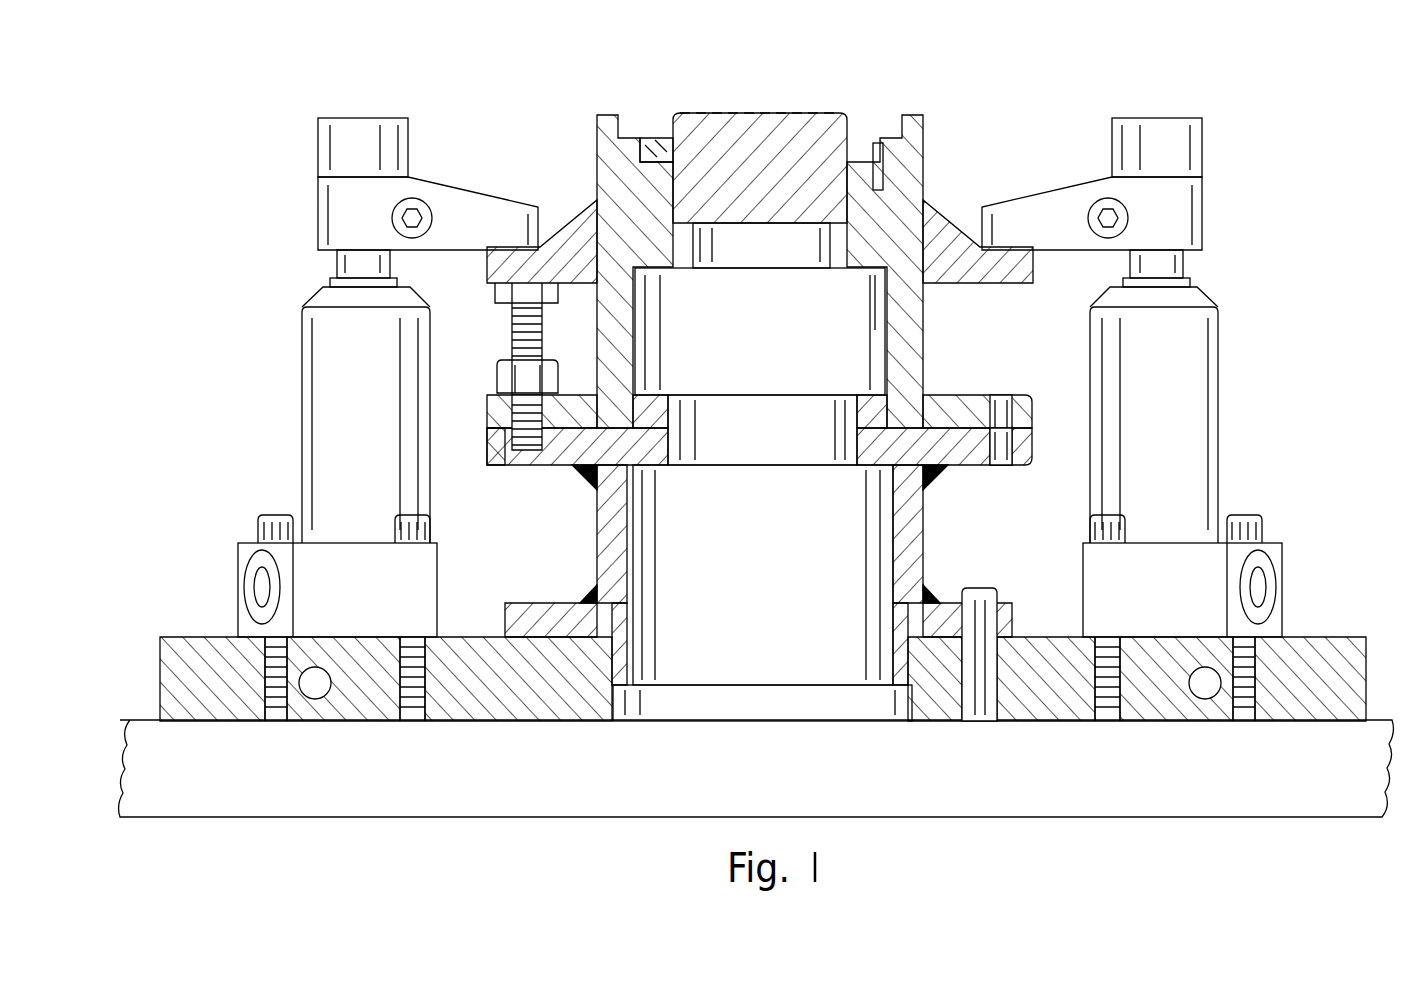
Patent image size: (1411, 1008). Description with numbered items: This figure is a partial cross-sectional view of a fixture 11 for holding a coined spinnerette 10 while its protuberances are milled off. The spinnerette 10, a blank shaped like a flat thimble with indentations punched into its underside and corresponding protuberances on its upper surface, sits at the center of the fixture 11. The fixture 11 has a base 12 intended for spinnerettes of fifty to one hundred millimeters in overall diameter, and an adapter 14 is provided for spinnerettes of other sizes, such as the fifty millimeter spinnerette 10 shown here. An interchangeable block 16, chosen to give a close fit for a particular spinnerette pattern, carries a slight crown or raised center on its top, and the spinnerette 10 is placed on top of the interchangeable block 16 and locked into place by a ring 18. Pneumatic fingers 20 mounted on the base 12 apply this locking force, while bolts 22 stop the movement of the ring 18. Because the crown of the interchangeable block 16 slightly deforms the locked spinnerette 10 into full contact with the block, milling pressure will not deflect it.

The spinnerette 10 is at (755, 112).
The fixture 11 is at (168, 158).
The base 12 is at (1032, 452).
The adapter 14 is at (1033, 398).
The interchangeable block 16 is at (707, 120).
The ring 18 is at (923, 117).
The pneumatic fingers 20 is at (343, 117).
The bolts 22 is at (498, 307).